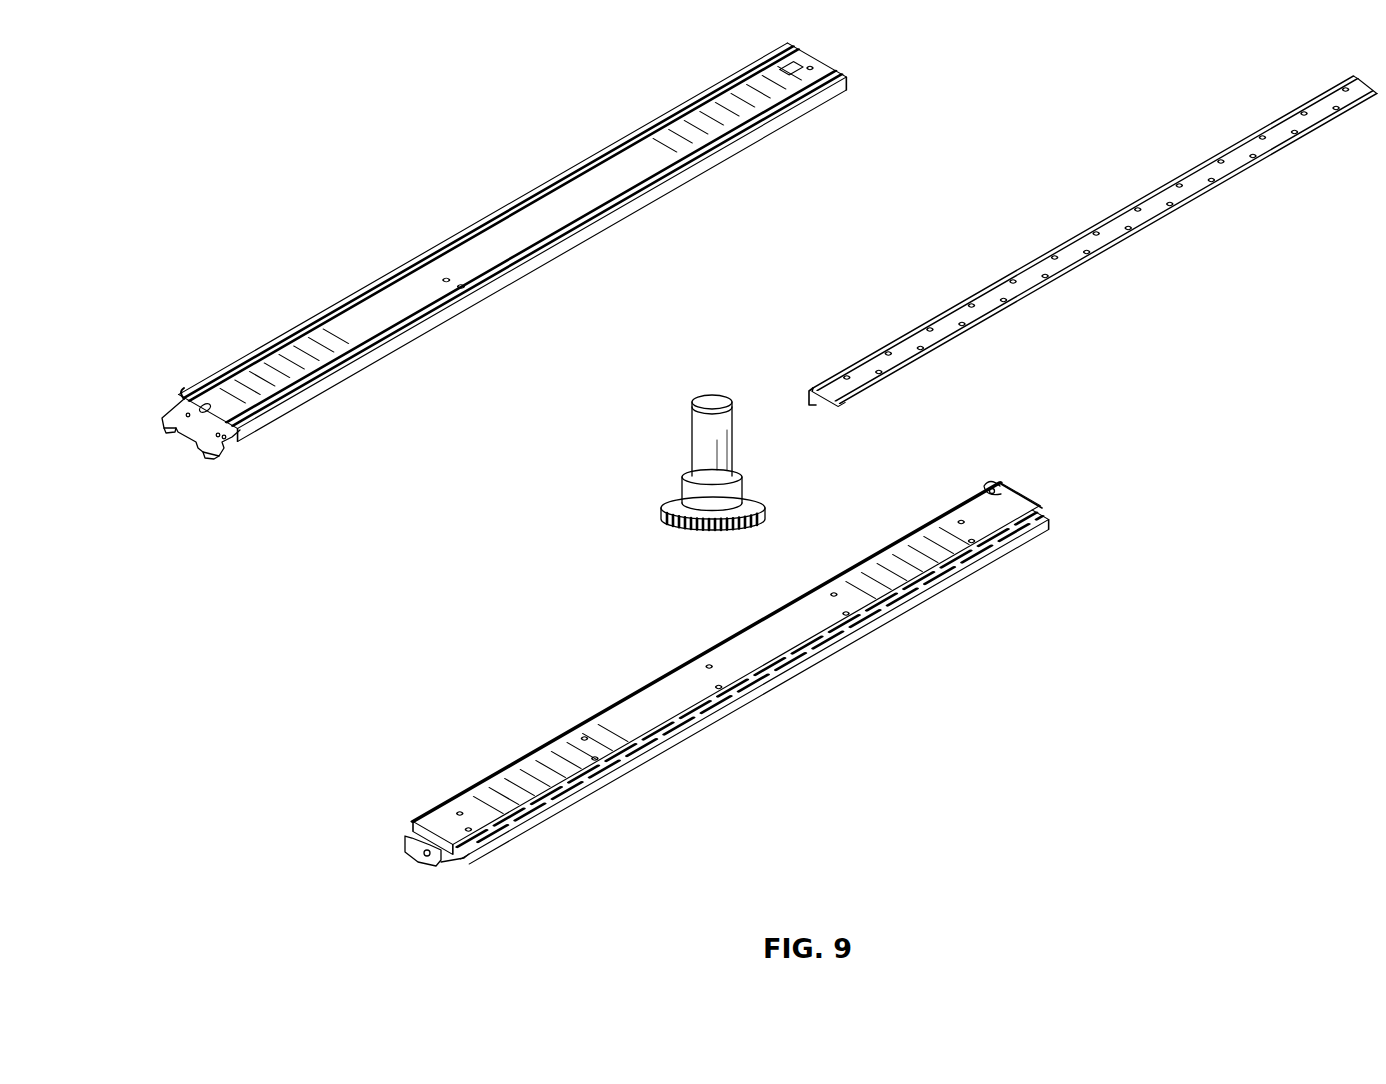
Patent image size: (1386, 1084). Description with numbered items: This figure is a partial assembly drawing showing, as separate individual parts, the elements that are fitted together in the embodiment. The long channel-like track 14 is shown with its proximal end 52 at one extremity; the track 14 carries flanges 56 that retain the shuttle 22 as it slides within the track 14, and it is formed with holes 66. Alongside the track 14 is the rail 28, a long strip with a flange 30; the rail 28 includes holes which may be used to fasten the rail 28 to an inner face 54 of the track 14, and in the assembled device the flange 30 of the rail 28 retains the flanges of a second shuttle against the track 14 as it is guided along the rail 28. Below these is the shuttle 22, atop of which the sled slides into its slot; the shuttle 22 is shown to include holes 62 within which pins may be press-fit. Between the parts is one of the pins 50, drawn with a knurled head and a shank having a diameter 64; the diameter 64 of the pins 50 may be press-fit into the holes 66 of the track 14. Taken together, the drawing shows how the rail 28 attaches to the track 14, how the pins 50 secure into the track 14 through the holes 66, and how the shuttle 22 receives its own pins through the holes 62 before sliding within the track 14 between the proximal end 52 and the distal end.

The track 14 is at (307, 156).
The inner face 54 is at (528, 228).
The flanges 56 is at (191, 389).
The holes 66 is at (180, 418).
The proximal end 52 is at (212, 458).
The rail 28 is at (1088, 246).
The flange 30 is at (818, 386).
The pins 50 is at (646, 429).
The diameter 64 is at (683, 490).
The shuttle 22 is at (577, 678).
The holes 62 is at (1032, 504).